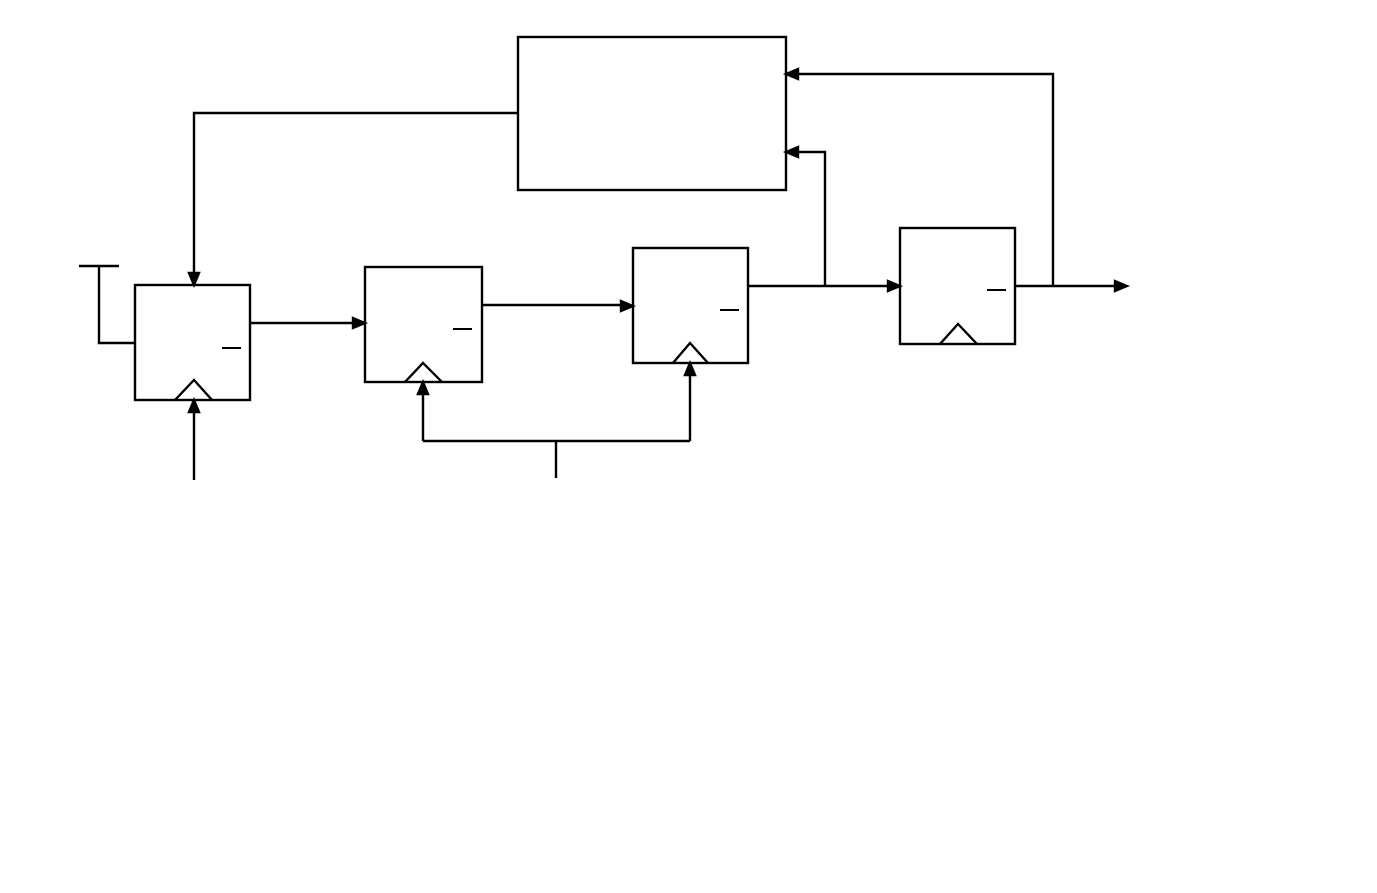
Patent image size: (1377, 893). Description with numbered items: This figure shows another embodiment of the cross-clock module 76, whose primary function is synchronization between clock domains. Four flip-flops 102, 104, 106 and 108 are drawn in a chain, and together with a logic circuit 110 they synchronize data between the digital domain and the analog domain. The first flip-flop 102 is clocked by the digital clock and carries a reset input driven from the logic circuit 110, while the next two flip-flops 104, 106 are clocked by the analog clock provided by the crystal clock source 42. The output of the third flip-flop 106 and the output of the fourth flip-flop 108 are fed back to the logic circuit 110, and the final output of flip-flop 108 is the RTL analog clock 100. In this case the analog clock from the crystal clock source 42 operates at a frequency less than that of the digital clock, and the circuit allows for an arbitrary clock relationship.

The flip-flop 102 is at (222, 405).
The flip-flop 104 is at (499, 308).
The flip-flop 106 is at (766, 288).
The flip-flop 108 is at (957, 270).
The logic circuit 110 is at (621, 161).
The RTL analog clock 100 is at (1187, 260).
The crystal clock source 42 is at (556, 454).
The cross-clock module 76 is at (719, 409).